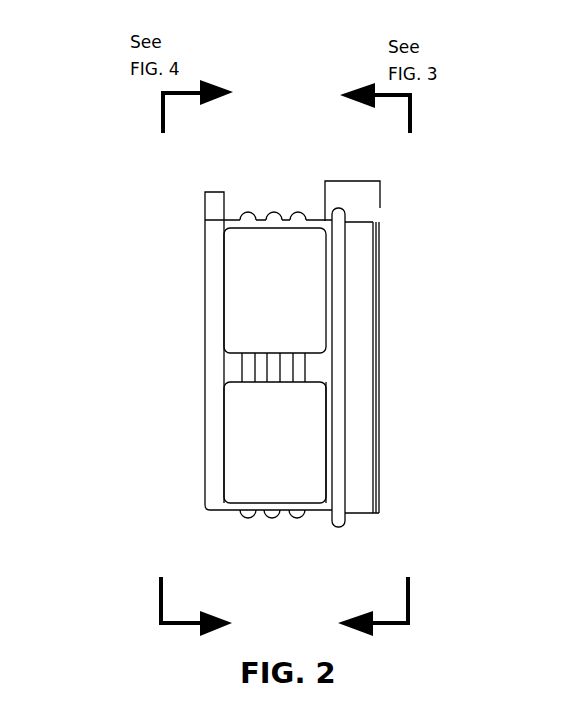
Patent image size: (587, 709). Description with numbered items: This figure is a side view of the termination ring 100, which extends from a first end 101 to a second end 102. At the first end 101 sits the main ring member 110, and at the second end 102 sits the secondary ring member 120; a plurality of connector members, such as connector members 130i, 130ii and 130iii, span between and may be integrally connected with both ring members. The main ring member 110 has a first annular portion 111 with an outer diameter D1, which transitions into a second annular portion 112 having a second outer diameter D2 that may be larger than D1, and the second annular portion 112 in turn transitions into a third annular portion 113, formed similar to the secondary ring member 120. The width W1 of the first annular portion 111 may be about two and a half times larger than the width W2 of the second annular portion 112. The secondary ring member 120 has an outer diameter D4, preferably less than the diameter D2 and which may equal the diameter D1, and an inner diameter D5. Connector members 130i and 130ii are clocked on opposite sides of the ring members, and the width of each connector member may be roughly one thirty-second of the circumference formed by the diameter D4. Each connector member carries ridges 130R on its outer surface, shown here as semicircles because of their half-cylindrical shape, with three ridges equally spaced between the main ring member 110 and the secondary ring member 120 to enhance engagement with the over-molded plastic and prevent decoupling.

The termination ring 100 is at (150, 176).
The first end 101 is at (379, 515).
The second end 102 is at (204, 518).
The main ring member 110 is at (353, 181).
The first annular portion 111 is at (357, 311).
The second annular portion 112 is at (340, 456).
The third annular portion 113 is at (327, 494).
The secondary ring member 120 is at (214, 192).
The connector member 130i is at (288, 222).
The connector member 130ii is at (262, 503).
The connector member 130iii is at (262, 353).
The ridges 130R is at (247, 521).
The width of the first annular portion W1 is at (345, 258).
The width of the second annular portion W2 is at (300, 401).
The outer diameter of the first annular portion D1 is at (387, 222).
The second outer diameter D2 is at (350, 528).
The outer diameter of the secondary ring member D4 is at (205, 220).
The inner diameter of the secondary ring member D5 is at (205, 228).